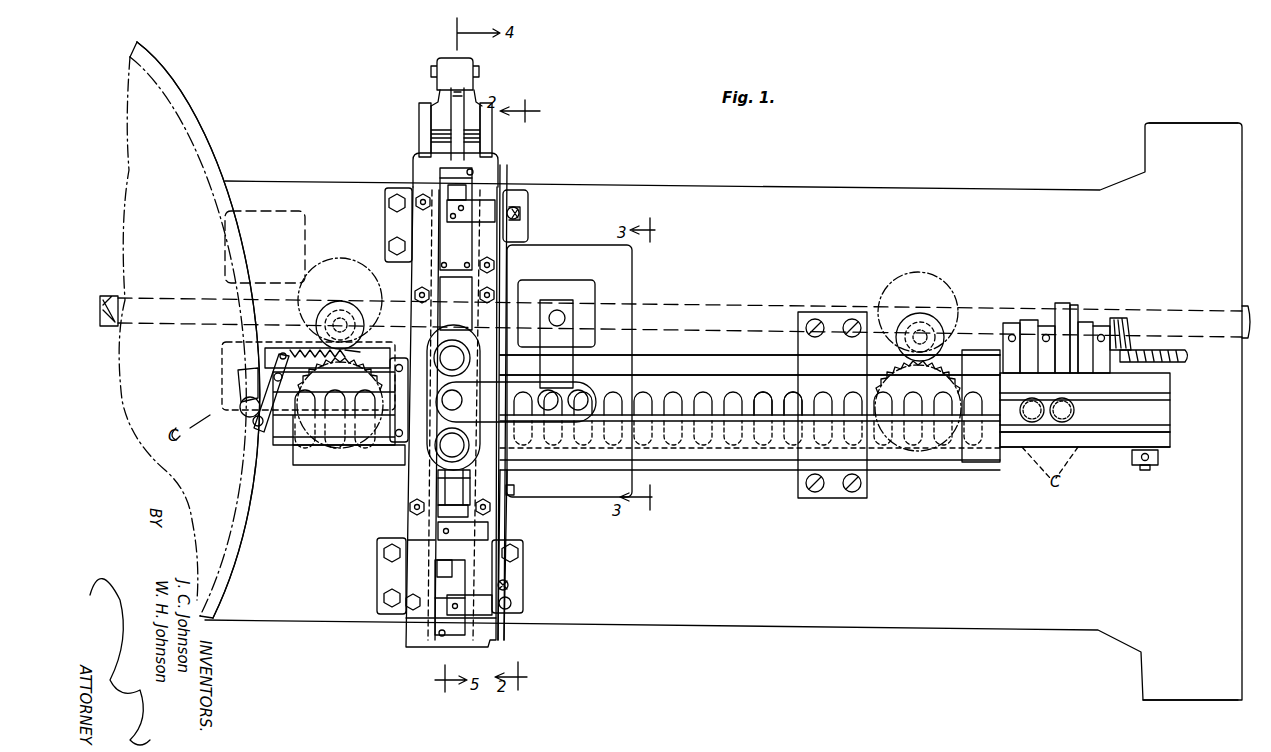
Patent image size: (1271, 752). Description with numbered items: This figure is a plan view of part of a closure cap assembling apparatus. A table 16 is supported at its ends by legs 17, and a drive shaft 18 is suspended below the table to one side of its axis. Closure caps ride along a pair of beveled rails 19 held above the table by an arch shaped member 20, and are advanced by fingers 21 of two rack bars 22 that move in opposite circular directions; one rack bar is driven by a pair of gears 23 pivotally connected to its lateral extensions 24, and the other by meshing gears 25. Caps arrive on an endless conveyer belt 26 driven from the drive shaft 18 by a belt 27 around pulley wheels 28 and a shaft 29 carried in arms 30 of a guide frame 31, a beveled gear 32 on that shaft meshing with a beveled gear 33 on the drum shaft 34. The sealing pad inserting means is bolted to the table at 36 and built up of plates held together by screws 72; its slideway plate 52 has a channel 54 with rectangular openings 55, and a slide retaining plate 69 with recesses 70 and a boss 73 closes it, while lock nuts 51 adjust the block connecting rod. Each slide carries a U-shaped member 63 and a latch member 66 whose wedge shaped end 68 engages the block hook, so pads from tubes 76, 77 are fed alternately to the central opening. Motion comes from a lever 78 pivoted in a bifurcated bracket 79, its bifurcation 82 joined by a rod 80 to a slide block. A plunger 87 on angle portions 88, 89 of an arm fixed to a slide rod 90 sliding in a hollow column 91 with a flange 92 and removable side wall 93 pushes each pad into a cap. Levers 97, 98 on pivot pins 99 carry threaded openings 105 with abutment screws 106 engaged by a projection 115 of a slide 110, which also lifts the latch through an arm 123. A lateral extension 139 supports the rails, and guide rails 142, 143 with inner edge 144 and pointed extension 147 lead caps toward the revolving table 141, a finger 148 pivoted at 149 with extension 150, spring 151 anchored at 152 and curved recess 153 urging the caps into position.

The table 16 is at (975, 190).
The legs 17 is at (1165, 156).
The drive shaft 18 is at (115, 290).
The revolving table 141 is at (182, 98).
The rails 19 is at (690, 374).
The arch shaped member 20 is at (833, 312).
The fingers 21 is at (782, 398).
The rack bars 22 is at (980, 448).
The gears 23 is at (340, 258).
The lateral extensions 24 is at (352, 318).
The gears 25 is at (355, 352).
The endless conveyer belt 26 is at (1160, 412).
The belt 27 is at (1063, 303).
The pulley wheels 28 is at (1076, 305).
The shaft 29 is at (1008, 323).
The arms 30 is at (1030, 320).
The guide frame 31 is at (1115, 442).
The beveled gear 32 is at (1122, 320).
The beveled gear 33 is at (1183, 356).
The shaft 34 is at (1145, 468).
The bolts 36 is at (388, 205).
The screws 72 is at (420, 207).
The lock nuts 51 is at (455, 577).
The slideway plate 52 is at (415, 165).
The channel 54 is at (437, 160).
The rectangular openings 55 is at (472, 172).
The U-shaped member 63 is at (468, 183).
The latch member 66 is at (436, 510).
The wedge shaped end 68 is at (475, 197).
The slide retaining plate 69 is at (410, 528).
The rectangular recesses 70 is at (430, 618).
The boss 73 is at (447, 495).
The tube 76 is at (440, 455).
The tube 77 is at (438, 338).
The lever 78 is at (440, 103).
The bifurcated bracket 79 is at (421, 108).
The rod 80 is at (466, 100).
The bifurcation 82 is at (470, 62).
The plunger 87 is at (452, 390).
The angle portion 88 is at (548, 422).
The angle portion 89 is at (575, 330).
The slide rod 90 is at (565, 318).
The hollow column 91 is at (575, 282).
The flange 92 is at (600, 247).
The removable side wall 93 is at (680, 374).
The lever 97 is at (506, 520).
The lever 98 is at (508, 268).
The pivot pin 99 is at (515, 488).
The screw threaded opening 105 is at (518, 240).
The abutment screw 106 is at (522, 212).
The slide 110 is at (495, 203).
The projection 115 is at (525, 225).
The arm 123 is at (490, 535).
The lateral extension 139 is at (345, 448).
The guide rail 142 is at (393, 362).
The guide rail 143 is at (320, 462).
The inner guide edge 144 is at (240, 404).
The pointed extension 147 is at (272, 434).
The finger 148 is at (276, 378).
The pivot 149 is at (276, 352).
The extension 150 is at (284, 352).
The spring 151 is at (317, 367).
The spring anchorage 152 is at (356, 367).
The curved recess 153 is at (253, 422).